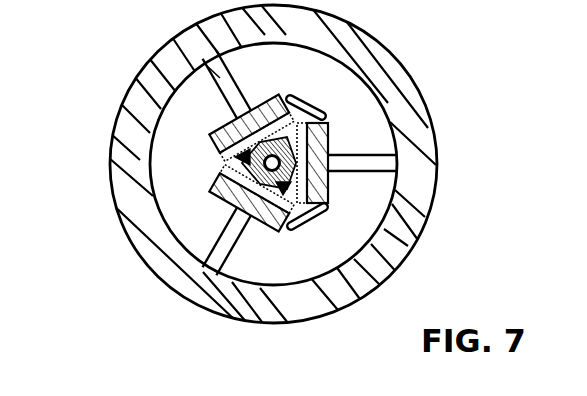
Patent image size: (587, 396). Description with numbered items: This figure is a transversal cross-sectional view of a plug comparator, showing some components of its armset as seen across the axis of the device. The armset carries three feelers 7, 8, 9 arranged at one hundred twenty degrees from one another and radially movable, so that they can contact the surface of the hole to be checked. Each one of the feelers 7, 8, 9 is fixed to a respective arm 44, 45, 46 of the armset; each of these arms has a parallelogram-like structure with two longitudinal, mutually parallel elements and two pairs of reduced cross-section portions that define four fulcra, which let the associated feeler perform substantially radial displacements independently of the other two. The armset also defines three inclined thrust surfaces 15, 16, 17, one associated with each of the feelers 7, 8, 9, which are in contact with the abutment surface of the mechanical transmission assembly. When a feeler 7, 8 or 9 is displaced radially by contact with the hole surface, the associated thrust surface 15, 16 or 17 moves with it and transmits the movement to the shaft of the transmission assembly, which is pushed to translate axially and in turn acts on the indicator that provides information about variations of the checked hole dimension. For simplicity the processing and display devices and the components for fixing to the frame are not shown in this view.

The feeler 7 is at (213, 255).
The feeler 8 is at (172, 34).
The feeler 9 is at (372, 160).
The inclined thrust surface 15 is at (290, 232).
The inclined thrust surface 16 is at (228, 163).
The inclined thrust surface 17 is at (303, 94).
The arm 44 is at (218, 175).
The arm 45 is at (224, 152).
The arm 46 is at (333, 200).